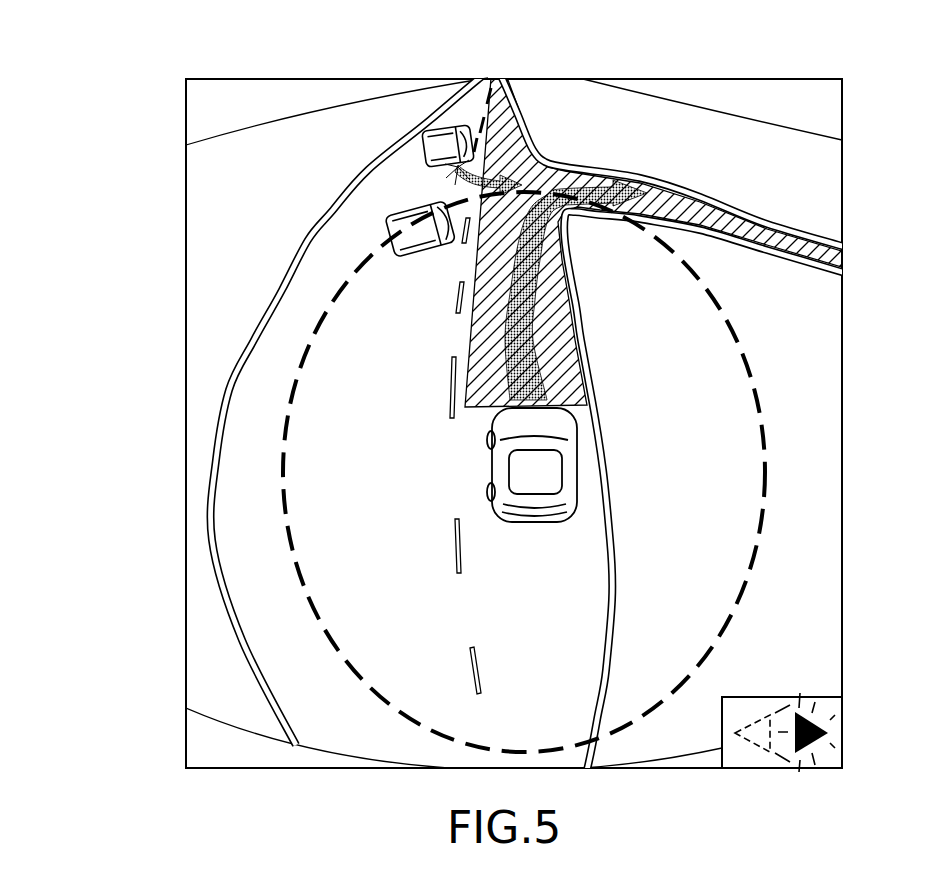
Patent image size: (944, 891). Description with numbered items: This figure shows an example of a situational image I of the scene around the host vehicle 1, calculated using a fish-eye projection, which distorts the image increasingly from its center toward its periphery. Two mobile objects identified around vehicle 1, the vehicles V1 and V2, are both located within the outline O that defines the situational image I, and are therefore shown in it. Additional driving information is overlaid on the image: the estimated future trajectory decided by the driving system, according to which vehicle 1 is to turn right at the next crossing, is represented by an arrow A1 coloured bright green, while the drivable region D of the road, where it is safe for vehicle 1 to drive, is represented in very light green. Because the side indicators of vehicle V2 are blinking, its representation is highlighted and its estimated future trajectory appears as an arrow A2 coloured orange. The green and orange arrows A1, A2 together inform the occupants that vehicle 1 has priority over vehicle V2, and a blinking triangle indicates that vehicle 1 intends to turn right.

The vehicle 1 is at (590, 463).
The vehicle V1 is at (380, 211).
The vehicle V2 is at (424, 144).
The arrow A1 is at (516, 334).
The arrow A2 is at (510, 168).
The drivable region D is at (568, 274).
The outline O is at (260, 118).
The situational image I is at (142, 290).